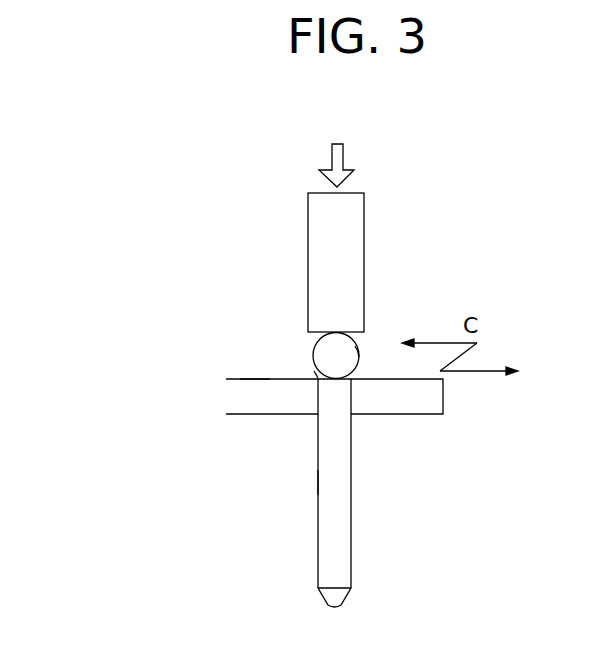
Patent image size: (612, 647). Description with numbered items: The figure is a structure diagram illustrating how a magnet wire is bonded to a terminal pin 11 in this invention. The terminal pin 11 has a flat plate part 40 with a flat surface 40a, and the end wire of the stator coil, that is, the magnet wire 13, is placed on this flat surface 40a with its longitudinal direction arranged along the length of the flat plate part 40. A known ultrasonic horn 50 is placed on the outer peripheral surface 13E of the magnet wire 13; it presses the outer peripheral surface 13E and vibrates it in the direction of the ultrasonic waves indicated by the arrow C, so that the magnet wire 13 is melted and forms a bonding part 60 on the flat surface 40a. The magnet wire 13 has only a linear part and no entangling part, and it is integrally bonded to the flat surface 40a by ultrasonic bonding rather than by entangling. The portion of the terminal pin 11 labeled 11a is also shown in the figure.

The ultrasonic horn 50 is at (364, 247).
The magnet wire 13 is at (313, 350).
The outer peripheral surface 13E is at (355, 346).
The bonding part 60 is at (312, 370).
The flat plate part 40 is at (415, 400).
The flat surface 40a is at (253, 378).
The terminal pin 11 is at (377, 454).
The pin side surface 11a is at (317, 481).